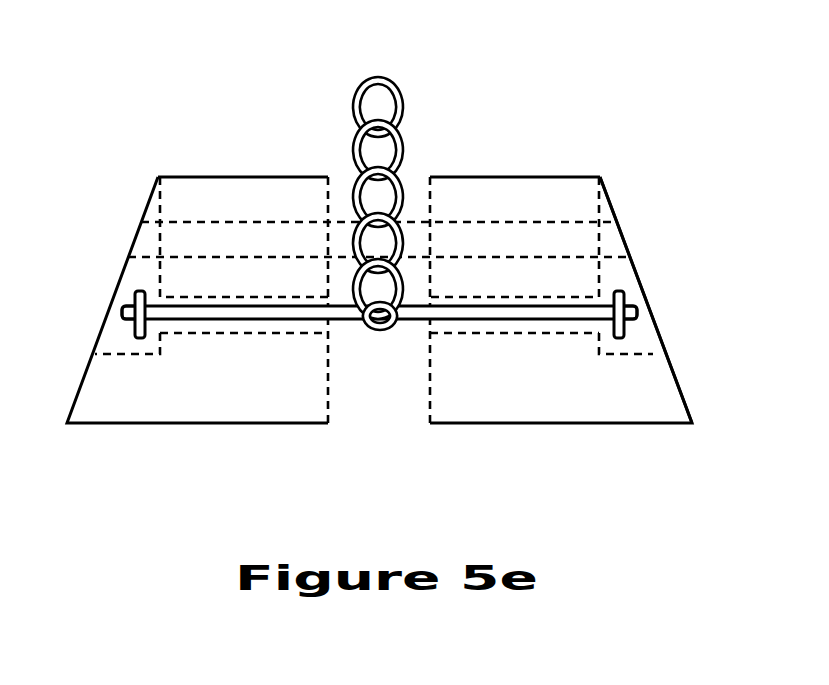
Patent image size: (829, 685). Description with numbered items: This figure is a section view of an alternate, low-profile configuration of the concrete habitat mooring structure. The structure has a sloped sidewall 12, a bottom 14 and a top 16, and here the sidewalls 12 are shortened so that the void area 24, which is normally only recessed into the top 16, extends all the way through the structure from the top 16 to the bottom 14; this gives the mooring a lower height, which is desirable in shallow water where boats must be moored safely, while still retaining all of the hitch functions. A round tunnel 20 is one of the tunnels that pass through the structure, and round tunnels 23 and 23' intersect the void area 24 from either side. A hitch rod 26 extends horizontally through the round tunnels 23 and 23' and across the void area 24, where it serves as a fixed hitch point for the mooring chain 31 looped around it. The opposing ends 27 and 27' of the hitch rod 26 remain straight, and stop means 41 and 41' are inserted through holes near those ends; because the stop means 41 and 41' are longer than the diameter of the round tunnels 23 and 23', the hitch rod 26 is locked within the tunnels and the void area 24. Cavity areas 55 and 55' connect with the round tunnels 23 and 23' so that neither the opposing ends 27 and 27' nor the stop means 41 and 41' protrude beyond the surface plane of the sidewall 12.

The sidewall 12 is at (615, 215).
The bottom 14 is at (138, 423).
The top 16 is at (490, 177).
The round tunnel 20 is at (528, 228).
The round tunnel 23 is at (514, 368).
The round tunnel 23' is at (244, 366).
The void area 24 is at (343, 187).
The hitch rod 26 is at (220, 313).
The opposing end 27 is at (679, 299).
The opposing end 27' is at (82, 298).
The mooring chain 31 is at (380, 78).
The stop means 41 is at (656, 287).
The stop means 41' is at (104, 287).
The cavity area 55 is at (661, 360).
The cavity area 55' is at (98, 360).